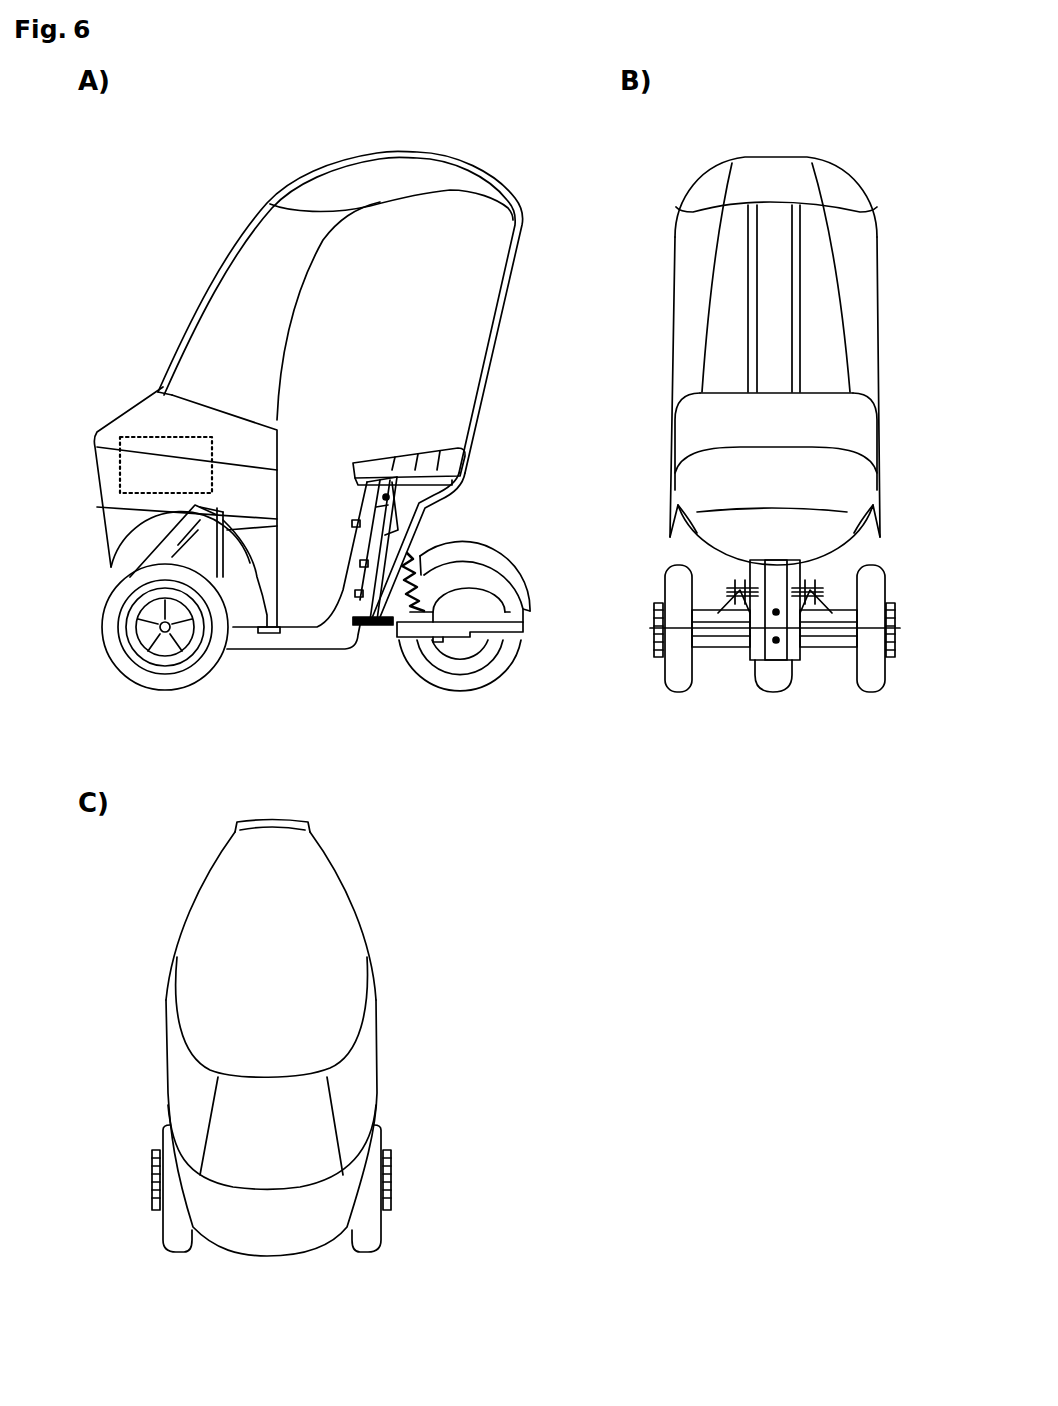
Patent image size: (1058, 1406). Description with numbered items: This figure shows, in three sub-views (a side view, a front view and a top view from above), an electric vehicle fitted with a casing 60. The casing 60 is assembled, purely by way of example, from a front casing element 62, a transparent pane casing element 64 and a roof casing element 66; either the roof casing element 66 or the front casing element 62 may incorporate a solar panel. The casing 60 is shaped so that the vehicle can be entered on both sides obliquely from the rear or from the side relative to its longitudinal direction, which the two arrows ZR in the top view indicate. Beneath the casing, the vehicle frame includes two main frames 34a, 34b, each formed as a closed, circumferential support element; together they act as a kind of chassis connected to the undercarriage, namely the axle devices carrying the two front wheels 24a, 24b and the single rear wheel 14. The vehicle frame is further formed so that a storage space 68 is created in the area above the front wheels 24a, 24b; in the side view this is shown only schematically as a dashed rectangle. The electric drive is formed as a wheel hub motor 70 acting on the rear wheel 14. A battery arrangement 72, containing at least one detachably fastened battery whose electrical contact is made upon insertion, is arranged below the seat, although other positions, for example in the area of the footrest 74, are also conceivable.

The casing 60 is at (217, 246).
The transparent pane casing element 64 is at (200, 300).
The roof casing element 66 is at (403, 156).
The front casing element 62 is at (128, 418).
The storage space 68 is at (108, 471).
The battery arrangement 72 is at (357, 538).
The footrest 74 is at (286, 618).
The wheel hub motor 70 is at (458, 597).
The main frame 34b is at (488, 398).
The main frame 34a is at (740, 336).
The front wheel 24b is at (160, 650).
The front wheel 24a is at (676, 665).
The rear wheel 14 is at (445, 663).
The arrows indicating access direction ZR is at (140, 945).